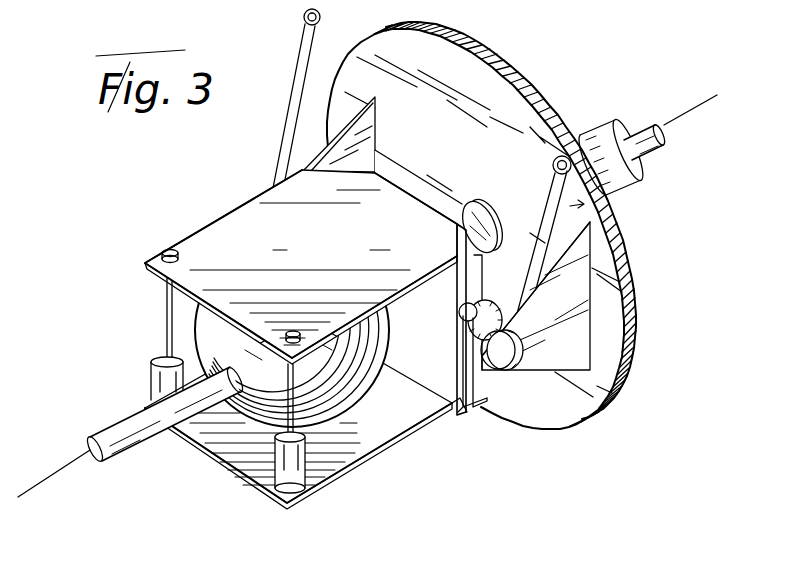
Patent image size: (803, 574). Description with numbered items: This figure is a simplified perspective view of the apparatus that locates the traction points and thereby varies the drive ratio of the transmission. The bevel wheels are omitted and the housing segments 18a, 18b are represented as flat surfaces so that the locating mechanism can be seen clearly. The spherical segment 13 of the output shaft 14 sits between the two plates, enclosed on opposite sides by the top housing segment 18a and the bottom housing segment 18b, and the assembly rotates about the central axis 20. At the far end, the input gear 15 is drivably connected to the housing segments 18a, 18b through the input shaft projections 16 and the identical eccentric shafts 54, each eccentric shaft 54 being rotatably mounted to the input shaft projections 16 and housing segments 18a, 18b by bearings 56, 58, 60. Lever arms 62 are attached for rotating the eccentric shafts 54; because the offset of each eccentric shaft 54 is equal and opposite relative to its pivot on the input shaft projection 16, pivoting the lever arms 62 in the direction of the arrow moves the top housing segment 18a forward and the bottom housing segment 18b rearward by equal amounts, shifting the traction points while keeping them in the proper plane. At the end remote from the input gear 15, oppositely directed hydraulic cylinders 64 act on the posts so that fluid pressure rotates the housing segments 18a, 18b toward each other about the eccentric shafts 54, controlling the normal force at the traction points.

The spherical segment 13 is at (288, 398).
The output shaft 14 is at (643, 148).
The input gear 15 is at (492, 133).
The input shaft projections 16 is at (348, 143).
The top housing segment 18a is at (204, 265).
The bottom housing segment 18b is at (366, 444).
The axis 20 is at (77, 466).
The eccentric shafts 54 is at (497, 310).
The bearing 56 is at (490, 377).
The bearing 58 is at (460, 312).
The bearing 60 is at (453, 360).
The lever arms 62 is at (300, 110).
The hydraulic cylinders 64 is at (153, 376).